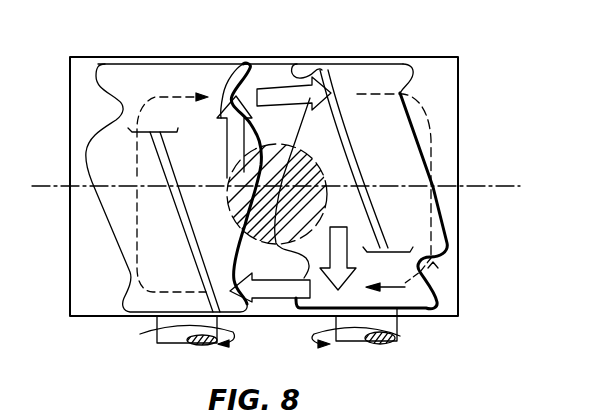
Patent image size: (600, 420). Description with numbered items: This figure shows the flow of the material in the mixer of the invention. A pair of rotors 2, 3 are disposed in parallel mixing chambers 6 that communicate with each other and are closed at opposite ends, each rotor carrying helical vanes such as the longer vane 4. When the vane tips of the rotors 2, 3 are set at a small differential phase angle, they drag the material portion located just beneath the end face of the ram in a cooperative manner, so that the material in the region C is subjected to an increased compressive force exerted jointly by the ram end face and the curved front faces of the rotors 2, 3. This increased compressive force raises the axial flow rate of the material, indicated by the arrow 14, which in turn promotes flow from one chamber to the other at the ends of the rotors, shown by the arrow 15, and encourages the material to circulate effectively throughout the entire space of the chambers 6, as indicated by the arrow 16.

The rotor 2 is at (420, 300).
The rotor 3 is at (131, 312).
The longer vane 4 is at (192, 237).
The mixing chamber 6 is at (70, 117).
The arrow indicating axial flow 14 is at (240, 64).
The arrow indicating inter-chamber flow 15 is at (316, 86).
The arrow indicating circulation 16 is at (440, 268).
The region under increased compressive force C is at (312, 176).